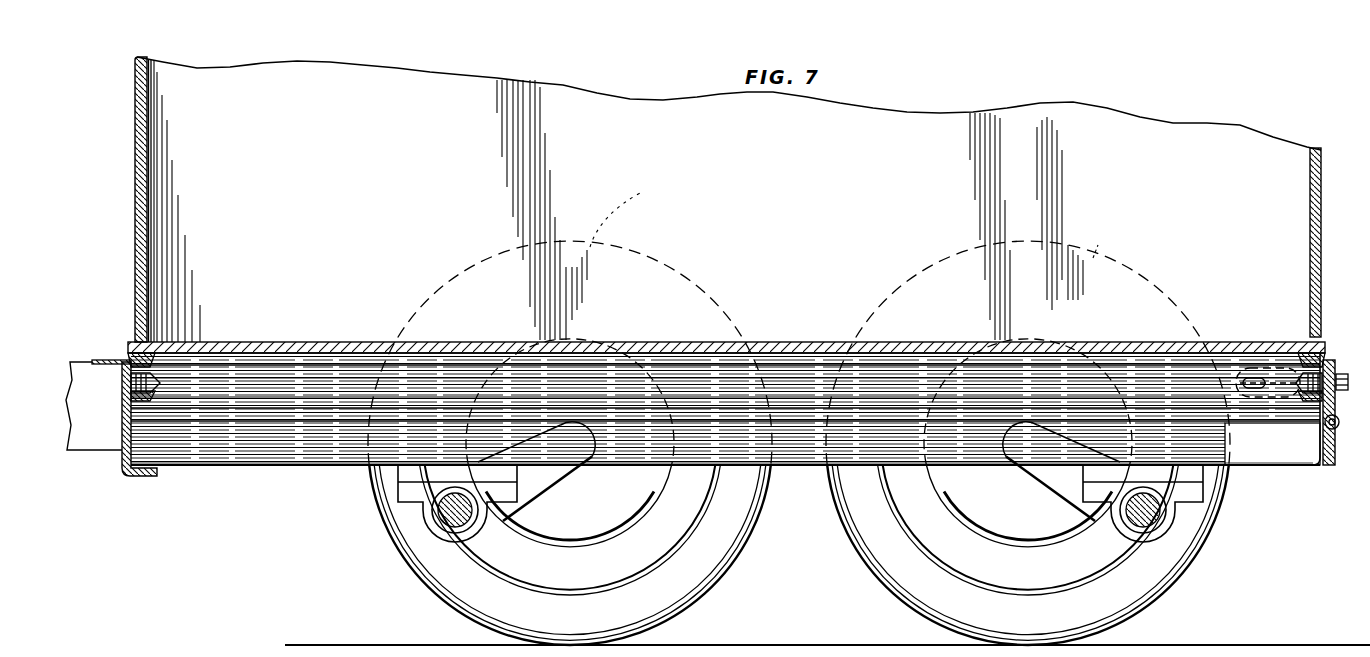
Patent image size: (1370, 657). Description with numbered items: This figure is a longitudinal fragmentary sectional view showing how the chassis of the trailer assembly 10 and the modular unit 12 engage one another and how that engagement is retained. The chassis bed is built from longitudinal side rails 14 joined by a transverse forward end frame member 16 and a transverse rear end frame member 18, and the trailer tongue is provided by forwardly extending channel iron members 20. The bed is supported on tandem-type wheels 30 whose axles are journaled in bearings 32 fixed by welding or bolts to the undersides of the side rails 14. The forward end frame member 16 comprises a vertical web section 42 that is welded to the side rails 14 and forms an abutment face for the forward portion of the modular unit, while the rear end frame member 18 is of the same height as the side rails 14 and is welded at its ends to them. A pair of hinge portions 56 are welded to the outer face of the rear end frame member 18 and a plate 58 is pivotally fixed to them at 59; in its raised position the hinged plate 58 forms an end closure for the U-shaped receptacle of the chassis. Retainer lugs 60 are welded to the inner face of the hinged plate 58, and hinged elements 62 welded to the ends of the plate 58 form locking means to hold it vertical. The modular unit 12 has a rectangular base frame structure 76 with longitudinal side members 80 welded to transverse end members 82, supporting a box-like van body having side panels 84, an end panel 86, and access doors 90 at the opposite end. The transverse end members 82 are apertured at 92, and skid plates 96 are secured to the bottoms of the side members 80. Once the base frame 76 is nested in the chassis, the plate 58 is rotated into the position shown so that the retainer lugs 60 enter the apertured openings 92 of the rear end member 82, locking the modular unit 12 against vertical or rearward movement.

The vehicle frame assembly 10 is at (232, 472).
The modular unit 12 is at (697, 199).
The longitudinal side rails 14 is at (296, 450).
The transverse forward end frame member 16 is at (118, 440).
The transverse rear end frame member 18 is at (1318, 463).
The channel iron members 20 is at (77, 370).
The tandem-type wheels 30 is at (860, 540).
The bearings 32 is at (428, 525).
The vertical web section 42 is at (122, 405).
The hinge portions 56 is at (1335, 458).
The hinged plate 58 is at (1342, 405).
The pivot 59 is at (1340, 422).
The retainer lugs 60 is at (1298, 357).
The hinged elements 62 is at (1247, 352).
The rectangular base frame structure 76 is at (778, 388).
The longitudinal side members 80 is at (323, 372).
The transverse end members 82 is at (131, 387).
The side panels 84 is at (842, 174).
The end panel 86 is at (134, 238).
The access doors 90 is at (1309, 228).
The apertured openings 92 is at (129, 348).
The skid plates 96 is at (968, 399).